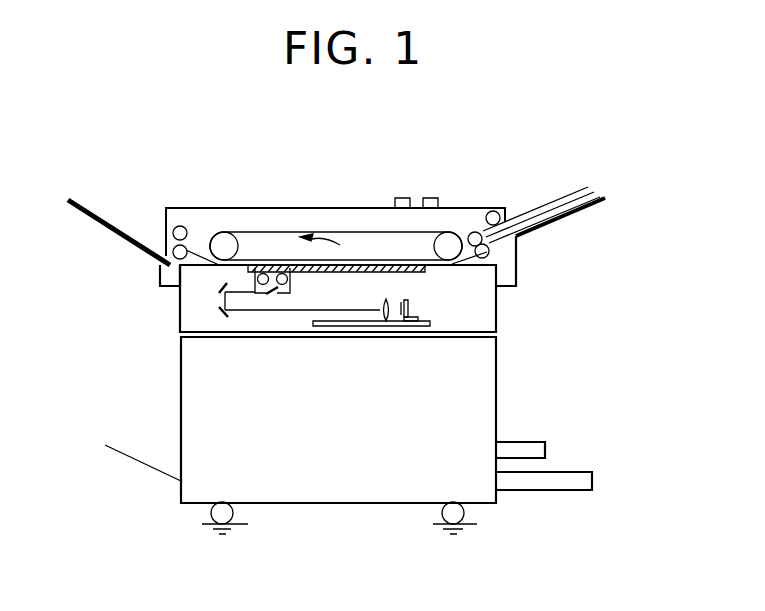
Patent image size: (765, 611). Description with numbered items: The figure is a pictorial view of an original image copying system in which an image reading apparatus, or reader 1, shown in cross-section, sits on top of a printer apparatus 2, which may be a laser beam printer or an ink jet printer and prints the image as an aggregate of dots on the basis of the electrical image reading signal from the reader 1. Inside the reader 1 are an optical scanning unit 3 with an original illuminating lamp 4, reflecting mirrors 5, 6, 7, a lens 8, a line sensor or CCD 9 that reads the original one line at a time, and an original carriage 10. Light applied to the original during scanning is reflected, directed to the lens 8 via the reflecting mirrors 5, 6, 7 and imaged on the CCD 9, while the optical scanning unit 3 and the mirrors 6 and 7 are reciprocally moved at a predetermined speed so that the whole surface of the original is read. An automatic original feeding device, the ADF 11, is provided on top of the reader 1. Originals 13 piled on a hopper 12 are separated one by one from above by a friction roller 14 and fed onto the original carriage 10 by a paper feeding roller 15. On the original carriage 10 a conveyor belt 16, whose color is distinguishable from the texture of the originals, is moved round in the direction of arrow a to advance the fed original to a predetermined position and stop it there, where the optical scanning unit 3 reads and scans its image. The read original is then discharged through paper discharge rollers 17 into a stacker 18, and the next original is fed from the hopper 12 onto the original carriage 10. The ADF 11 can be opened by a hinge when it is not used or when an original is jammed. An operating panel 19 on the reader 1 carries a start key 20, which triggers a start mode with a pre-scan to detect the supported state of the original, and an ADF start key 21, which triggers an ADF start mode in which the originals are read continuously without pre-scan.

The image reading apparatus 1 is at (487, 313).
The printer apparatus 2 is at (487, 378).
The optical scanning unit 3 is at (290, 284).
The original illuminating lamp 4 is at (279, 273).
The reflecting mirror 5 is at (273, 296).
The reflecting mirror 6 is at (218, 289).
The reflecting mirror 7 is at (218, 311).
The lens 8 is at (386, 322).
The line sensor (CCD) 9 is at (410, 307).
The original carriage 10 is at (355, 273).
The automatic original feeding device (ADF) 11 is at (238, 218).
The hopper 12 is at (592, 207).
The originals 13 is at (557, 189).
The friction roller 14 is at (492, 211).
The paper feeding roller 15 is at (472, 233).
The conveyor belt 16 is at (298, 229).
The paper discharge rollers 17 is at (172, 249).
The stacker 18 is at (121, 247).
The operating panel 19 is at (376, 207).
The start key 20 is at (404, 197).
The ADF start key 21 is at (434, 197).
The arrow a is at (328, 243).